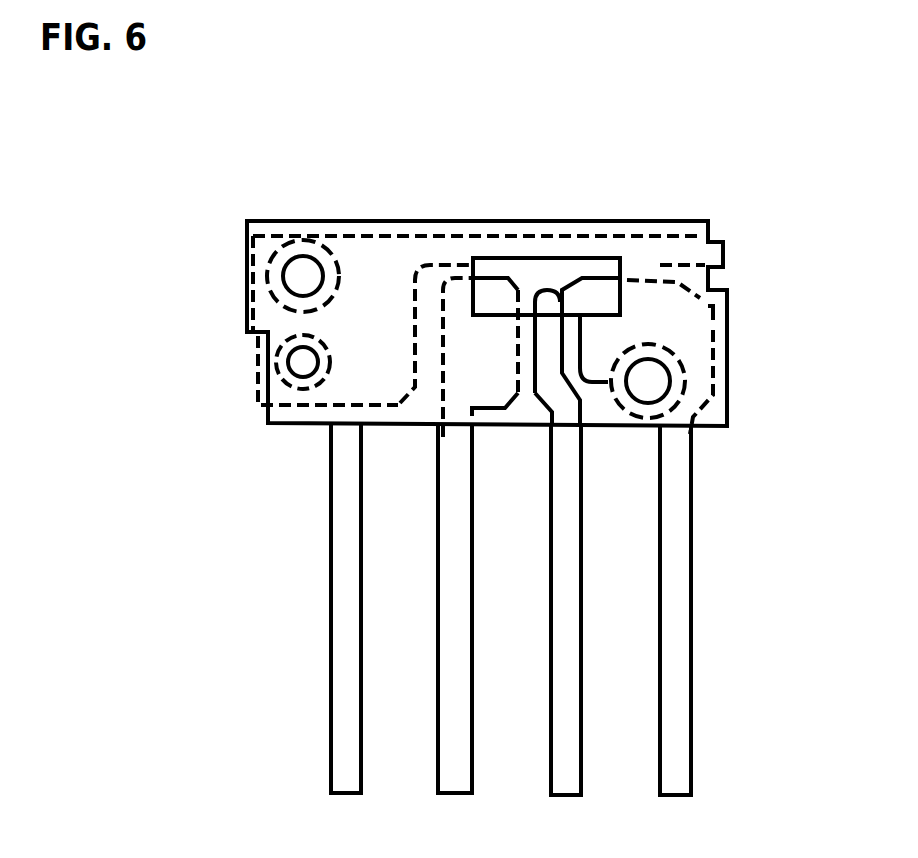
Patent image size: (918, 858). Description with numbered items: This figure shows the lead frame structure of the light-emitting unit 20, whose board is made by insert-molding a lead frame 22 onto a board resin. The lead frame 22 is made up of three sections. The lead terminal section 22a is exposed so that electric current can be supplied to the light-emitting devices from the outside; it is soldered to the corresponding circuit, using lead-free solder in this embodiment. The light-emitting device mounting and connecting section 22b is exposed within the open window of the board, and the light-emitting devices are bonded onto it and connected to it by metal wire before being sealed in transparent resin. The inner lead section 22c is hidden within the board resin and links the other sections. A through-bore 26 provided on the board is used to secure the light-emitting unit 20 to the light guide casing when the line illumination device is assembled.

The light-emitting unit 20 is at (723, 183).
The lead frame 22 is at (445, 609).
The lead terminal section 22a is at (453, 645).
The light-emitting device mounting and connecting section 22b is at (600, 292).
The inner lead section 22c is at (452, 292).
The through-bore 26 is at (303, 272).